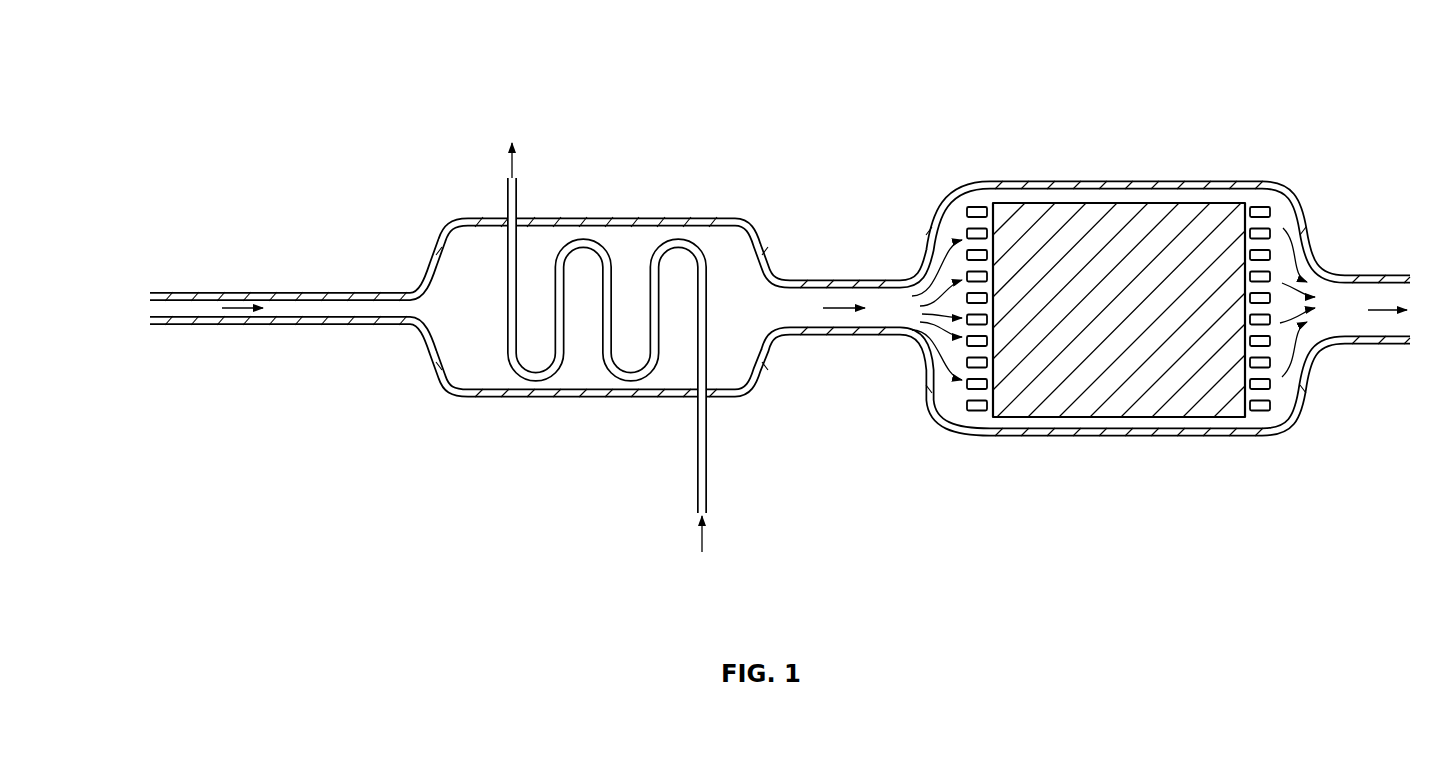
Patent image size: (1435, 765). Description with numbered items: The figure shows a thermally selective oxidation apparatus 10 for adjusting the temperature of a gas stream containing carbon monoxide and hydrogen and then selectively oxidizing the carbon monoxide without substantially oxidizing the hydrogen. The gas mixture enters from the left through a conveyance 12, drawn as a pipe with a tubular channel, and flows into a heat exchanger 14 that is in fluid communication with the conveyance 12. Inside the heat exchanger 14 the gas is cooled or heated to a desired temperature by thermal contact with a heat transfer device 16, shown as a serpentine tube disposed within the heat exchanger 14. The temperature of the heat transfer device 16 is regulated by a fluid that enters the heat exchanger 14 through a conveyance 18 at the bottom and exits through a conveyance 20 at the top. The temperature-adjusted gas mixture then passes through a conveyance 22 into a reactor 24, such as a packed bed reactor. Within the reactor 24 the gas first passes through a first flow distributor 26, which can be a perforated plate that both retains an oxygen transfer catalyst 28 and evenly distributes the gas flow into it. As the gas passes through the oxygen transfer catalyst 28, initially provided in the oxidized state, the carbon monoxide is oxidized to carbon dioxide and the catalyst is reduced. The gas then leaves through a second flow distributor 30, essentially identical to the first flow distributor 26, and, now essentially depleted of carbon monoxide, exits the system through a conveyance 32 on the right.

The thermally selective oxidation apparatus 10 is at (1153, 108).
The conveyance 12 is at (162, 310).
The heat exchanger 14 is at (683, 217).
The heat transfer device 16 is at (612, 375).
The conveyance 18 is at (705, 492).
The conveyance 20 is at (513, 182).
The conveyance 22 is at (848, 317).
The reactor 24 is at (1120, 437).
The first flow distributor 26 is at (962, 405).
The oxygen transfer catalyst 28 is at (1068, 385).
The second flow distributor 30 is at (1277, 387).
The conveyance 32 is at (1343, 315).